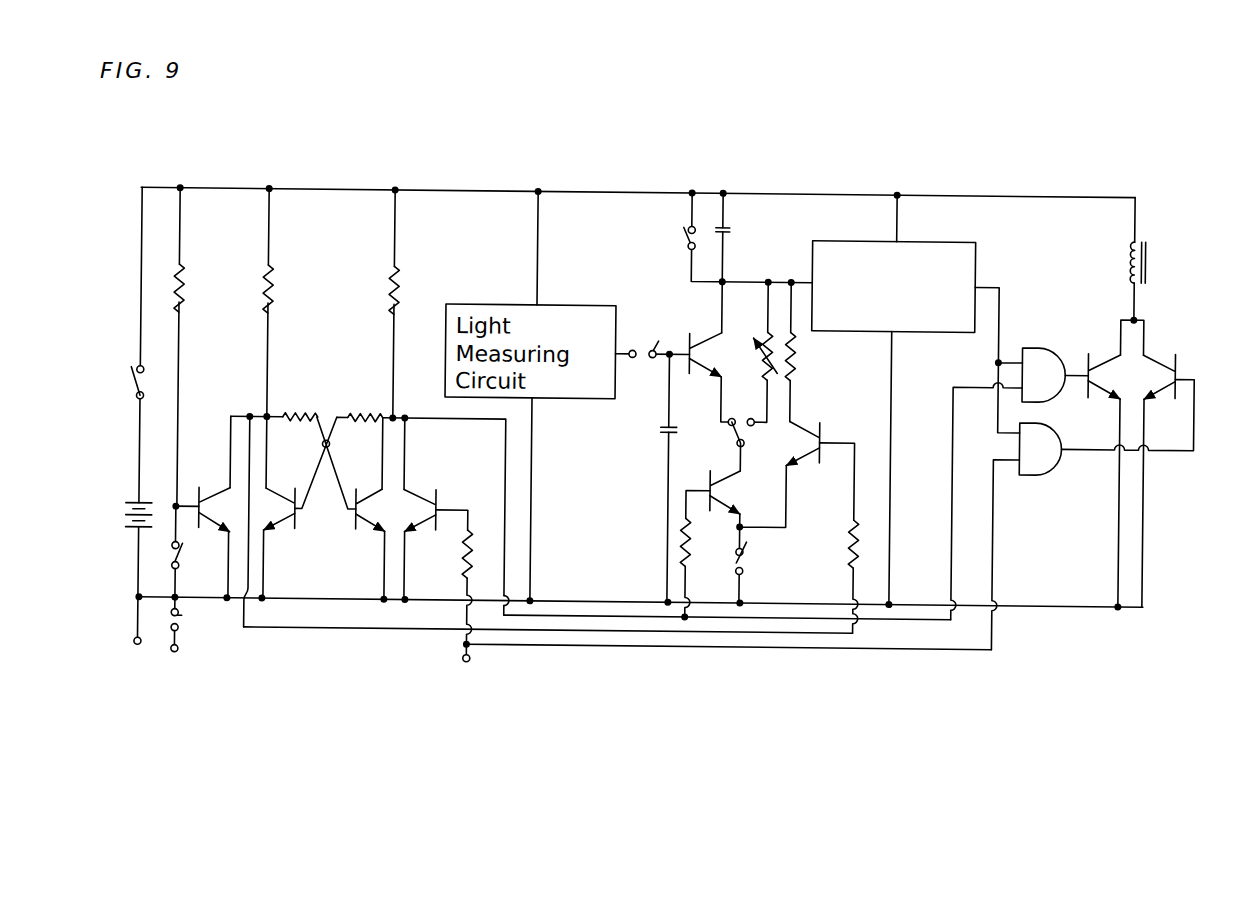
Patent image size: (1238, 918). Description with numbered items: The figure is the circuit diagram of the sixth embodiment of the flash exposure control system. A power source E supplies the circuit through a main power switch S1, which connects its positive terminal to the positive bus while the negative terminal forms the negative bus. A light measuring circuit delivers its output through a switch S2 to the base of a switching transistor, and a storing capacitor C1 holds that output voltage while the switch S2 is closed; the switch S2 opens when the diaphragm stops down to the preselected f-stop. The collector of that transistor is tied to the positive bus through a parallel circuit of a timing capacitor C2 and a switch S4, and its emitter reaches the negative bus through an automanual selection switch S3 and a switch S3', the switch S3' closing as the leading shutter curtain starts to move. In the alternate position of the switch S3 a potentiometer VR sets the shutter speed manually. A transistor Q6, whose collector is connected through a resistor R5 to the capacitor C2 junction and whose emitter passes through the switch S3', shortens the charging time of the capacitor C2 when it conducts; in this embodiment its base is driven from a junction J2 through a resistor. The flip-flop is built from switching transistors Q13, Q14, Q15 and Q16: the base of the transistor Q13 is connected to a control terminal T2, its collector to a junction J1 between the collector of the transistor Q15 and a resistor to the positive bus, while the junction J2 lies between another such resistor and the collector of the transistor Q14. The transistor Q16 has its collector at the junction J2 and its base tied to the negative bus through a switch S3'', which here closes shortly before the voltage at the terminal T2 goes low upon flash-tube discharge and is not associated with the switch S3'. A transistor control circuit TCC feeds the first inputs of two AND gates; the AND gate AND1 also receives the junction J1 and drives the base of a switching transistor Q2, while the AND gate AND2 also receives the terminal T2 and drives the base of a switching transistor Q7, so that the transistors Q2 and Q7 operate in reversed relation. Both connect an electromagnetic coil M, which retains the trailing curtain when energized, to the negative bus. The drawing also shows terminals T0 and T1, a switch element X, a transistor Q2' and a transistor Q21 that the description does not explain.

The main power switch S1 is at (138, 373).
The power source E is at (128, 522).
The terminal T0 is at (130, 642).
The terminal T1 is at (170, 657).
The switch contact X is at (184, 622).
The switch S3'' is at (198, 552).
The switching transistor Q16 is at (218, 490).
The junction J2 is at (268, 419).
The junction J1 is at (381, 419).
The switching transistor Q14 is at (281, 526).
The switching transistor Q15 is at (370, 527).
The switching transistor Q13 is at (417, 490).
The control terminal T2 is at (463, 671).
The switch S2 is at (643, 350).
The transistor Q2' is at (695, 341).
The switch S4 is at (684, 238).
The timing capacitor C2 is at (735, 231).
The storing capacitor C1 is at (660, 430).
The automanual selection switch S3 is at (716, 444).
The potentiometer VR is at (764, 364).
The resistor R5 is at (793, 356).
The transistor Q6 is at (803, 426).
The transistor Q21 is at (723, 508).
The switch S3' is at (769, 565).
The transistor control circuit TCC is at (952, 240).
The AND gate AND1 is at (1038, 345).
The AND gate AND2 is at (1033, 474).
The switching transistor Q2 is at (1095, 359).
The switching transistor Q7 is at (1159, 357).
The electromagnetic coil M is at (1146, 264).